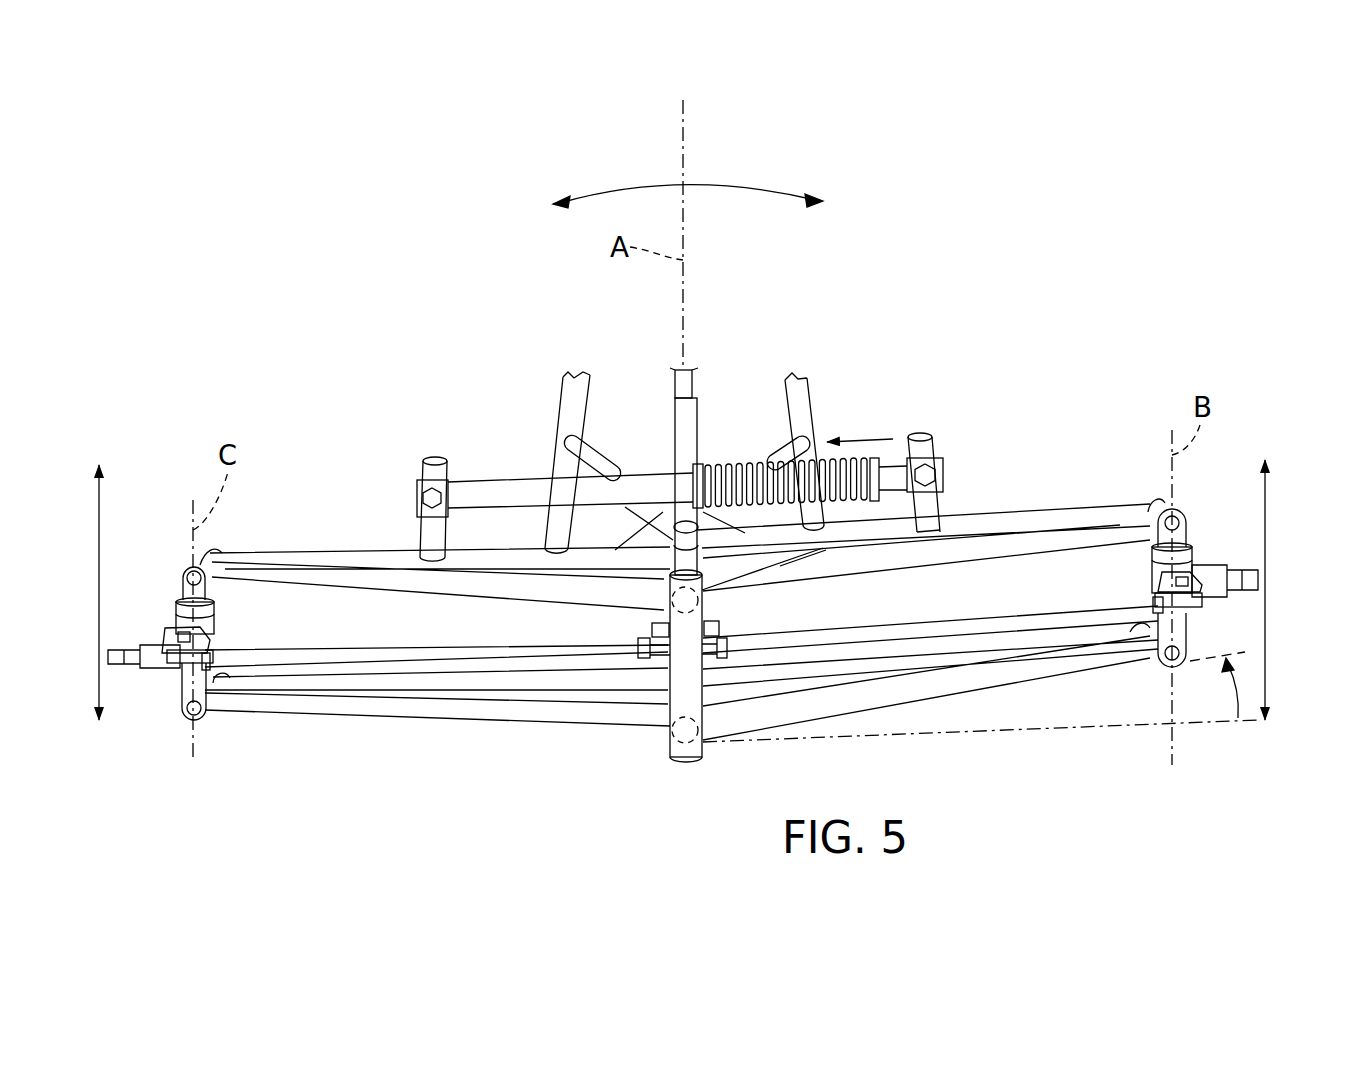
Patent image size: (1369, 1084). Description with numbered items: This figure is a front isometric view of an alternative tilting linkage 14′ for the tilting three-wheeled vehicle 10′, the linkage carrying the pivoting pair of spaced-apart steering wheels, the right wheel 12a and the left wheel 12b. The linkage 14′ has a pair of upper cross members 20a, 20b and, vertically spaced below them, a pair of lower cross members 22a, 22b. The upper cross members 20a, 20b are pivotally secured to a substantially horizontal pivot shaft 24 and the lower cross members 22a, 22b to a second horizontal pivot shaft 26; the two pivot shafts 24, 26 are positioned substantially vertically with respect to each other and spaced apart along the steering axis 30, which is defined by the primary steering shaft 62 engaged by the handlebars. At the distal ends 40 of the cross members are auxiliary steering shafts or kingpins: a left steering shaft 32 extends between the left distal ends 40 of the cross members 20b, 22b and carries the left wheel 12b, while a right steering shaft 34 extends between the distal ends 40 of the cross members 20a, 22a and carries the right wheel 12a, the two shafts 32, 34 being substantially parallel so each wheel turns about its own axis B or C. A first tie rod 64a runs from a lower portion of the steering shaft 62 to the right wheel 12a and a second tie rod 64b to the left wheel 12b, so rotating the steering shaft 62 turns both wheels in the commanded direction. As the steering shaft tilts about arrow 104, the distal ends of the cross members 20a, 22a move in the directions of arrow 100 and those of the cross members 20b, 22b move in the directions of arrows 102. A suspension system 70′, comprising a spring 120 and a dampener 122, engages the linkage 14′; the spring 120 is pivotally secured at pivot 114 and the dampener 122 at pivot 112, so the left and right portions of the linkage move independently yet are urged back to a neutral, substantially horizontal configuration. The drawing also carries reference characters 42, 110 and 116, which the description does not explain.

The tilting three-wheeled vehicle 10′ is at (932, 390).
The right wheel 12a is at (135, 665).
The left wheel 12b is at (1248, 608).
The alternative tilting linkage 14′ is at (533, 427).
The upper cross member 20a is at (322, 552).
The upper cross member 20b is at (1067, 505).
The lower cross member 22a is at (494, 721).
The lower cross member 22b is at (965, 698).
The pivot shaft 24 is at (660, 602).
The pivot shaft 26 is at (674, 738).
The steering axis 30 is at (683, 300).
The left steering shaft 32 is at (1163, 645).
The right steering shaft 34 is at (180, 690).
The distal ends 40 is at (1175, 518).
The pivot pin 42 is at (187, 578).
The primary steering shaft 62 is at (672, 370).
The first tie rod 64a is at (380, 645).
The second tie rod 64b is at (947, 617).
The suspension system 70′ is at (755, 436).
The arrow 100 is at (103, 540).
The arrows 102 is at (1262, 555).
The arrow 104 is at (733, 190).
The spring 110 is at (728, 462).
The pivot 112 is at (462, 479).
The pivot 114 is at (944, 465).
The compression direction 116 is at (875, 432).
The spring 120 is at (823, 437).
The dampener 122 is at (641, 482).